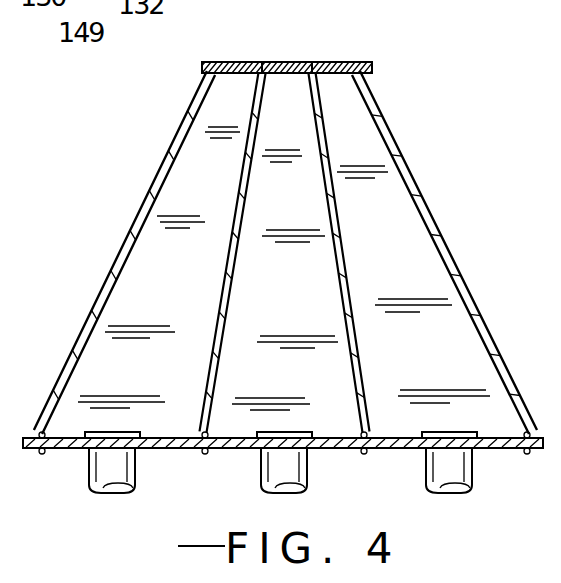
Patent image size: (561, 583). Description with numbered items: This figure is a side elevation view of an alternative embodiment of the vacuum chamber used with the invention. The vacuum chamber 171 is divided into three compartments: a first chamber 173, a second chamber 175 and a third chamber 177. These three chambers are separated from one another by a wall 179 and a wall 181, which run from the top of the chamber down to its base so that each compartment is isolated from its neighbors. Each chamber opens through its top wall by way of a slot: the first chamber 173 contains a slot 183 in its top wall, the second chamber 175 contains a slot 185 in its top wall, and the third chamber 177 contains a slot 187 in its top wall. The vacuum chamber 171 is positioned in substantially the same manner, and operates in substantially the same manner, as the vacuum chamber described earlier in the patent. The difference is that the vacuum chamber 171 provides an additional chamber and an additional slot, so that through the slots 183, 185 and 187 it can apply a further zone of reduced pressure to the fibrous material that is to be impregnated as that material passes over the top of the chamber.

The vacuum chamber 171 is at (412, 172).
The first chamber 173 is at (413, 283).
The second chamber 175 is at (300, 304).
The third chamber 177 is at (178, 303).
The wall 179 is at (364, 358).
The wall 181 is at (213, 363).
The slot 183 is at (331, 62).
The slot 185 is at (287, 62).
The slot 187 is at (238, 62).